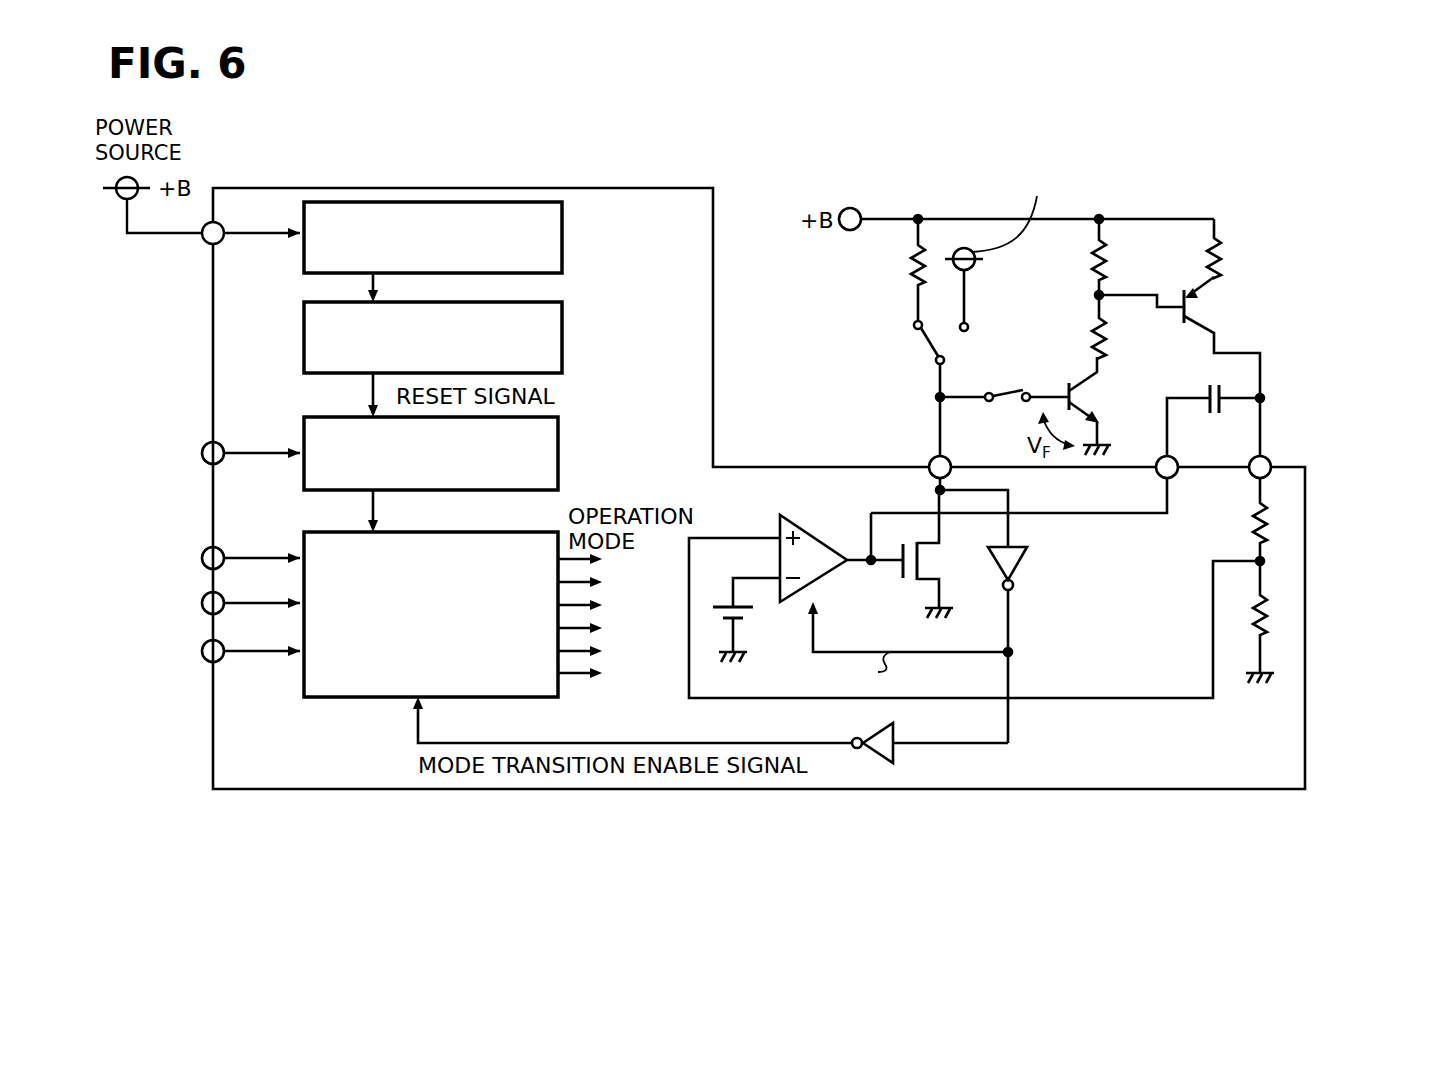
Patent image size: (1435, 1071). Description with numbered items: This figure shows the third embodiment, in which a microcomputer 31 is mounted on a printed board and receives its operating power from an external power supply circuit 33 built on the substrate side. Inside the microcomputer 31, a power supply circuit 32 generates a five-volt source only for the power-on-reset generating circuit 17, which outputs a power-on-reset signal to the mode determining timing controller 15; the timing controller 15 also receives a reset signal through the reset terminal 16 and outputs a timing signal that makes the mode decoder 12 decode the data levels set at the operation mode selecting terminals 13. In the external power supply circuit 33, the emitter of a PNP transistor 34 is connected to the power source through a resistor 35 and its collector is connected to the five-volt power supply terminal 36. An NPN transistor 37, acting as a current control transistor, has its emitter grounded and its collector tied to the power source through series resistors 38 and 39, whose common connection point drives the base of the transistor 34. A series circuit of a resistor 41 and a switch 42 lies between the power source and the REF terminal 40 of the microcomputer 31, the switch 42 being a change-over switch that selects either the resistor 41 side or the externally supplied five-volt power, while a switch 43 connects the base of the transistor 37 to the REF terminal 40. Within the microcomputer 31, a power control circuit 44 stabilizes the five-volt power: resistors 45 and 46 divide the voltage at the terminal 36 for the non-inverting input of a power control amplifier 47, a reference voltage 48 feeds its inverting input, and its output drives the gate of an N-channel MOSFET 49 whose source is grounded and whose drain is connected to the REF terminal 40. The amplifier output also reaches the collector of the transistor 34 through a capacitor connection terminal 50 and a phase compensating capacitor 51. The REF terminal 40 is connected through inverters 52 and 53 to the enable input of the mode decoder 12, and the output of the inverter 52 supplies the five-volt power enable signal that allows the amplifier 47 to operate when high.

The mode decoder 12 is at (500, 699).
The operation mode selecting terminals 13 is at (195, 573).
The mode determining timing controller 15 is at (560, 436).
The reset terminal 16 is at (204, 446).
The power-on-reset generating circuit 17 is at (565, 337).
The microcomputer 31 is at (518, 188).
The power supply circuit 32 is at (565, 236).
The external power supply circuit 33 is at (972, 188).
The PNP transistor 34 is at (1205, 308).
The resistor 35 is at (1228, 250).
The 5V power supply terminal 36 is at (1268, 456).
The NPN transistor 37 is at (1093, 392).
The resistor 38 is at (1112, 258).
The resistor 39 is at (1112, 337).
The REF terminal 40 is at (948, 463).
The resistor 41 is at (906, 268).
The switch 42 is at (918, 348).
The switch 43 is at (1008, 392).
The power control circuit 44 is at (748, 512).
The resistor 45 is at (1250, 524).
The resistor 46 is at (1272, 606).
The power control amplifier 47 is at (818, 542).
The reference voltage 48 is at (755, 615).
The N-channel MOSFET 49 is at (940, 561).
The capacitor connection terminal 50 is at (1158, 460).
The phase compensating capacitor 51 is at (1213, 418).
The inverter 52 is at (1020, 563).
The inverter 53 is at (893, 752).